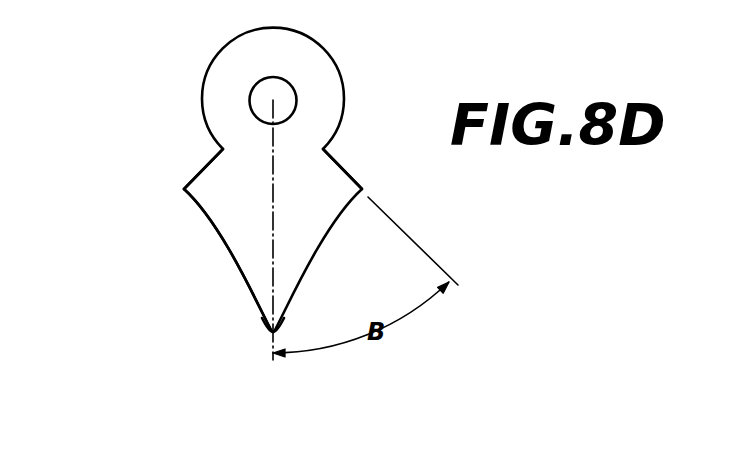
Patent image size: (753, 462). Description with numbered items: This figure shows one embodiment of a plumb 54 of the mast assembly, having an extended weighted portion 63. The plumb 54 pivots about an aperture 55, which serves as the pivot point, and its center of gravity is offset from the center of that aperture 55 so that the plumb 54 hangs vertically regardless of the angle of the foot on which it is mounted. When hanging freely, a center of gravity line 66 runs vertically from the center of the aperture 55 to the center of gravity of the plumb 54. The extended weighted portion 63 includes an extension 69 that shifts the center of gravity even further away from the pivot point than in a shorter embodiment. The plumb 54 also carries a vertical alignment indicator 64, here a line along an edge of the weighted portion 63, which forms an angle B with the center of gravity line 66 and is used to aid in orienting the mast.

The plumb 54 is at (112, 71).
The aperture 55 is at (273, 100).
The weighted portion 63 is at (217, 182).
The vertical alignment indicator 64 is at (350, 170).
The center of gravity line 66 is at (273, 292).
The extension 69 is at (228, 252).